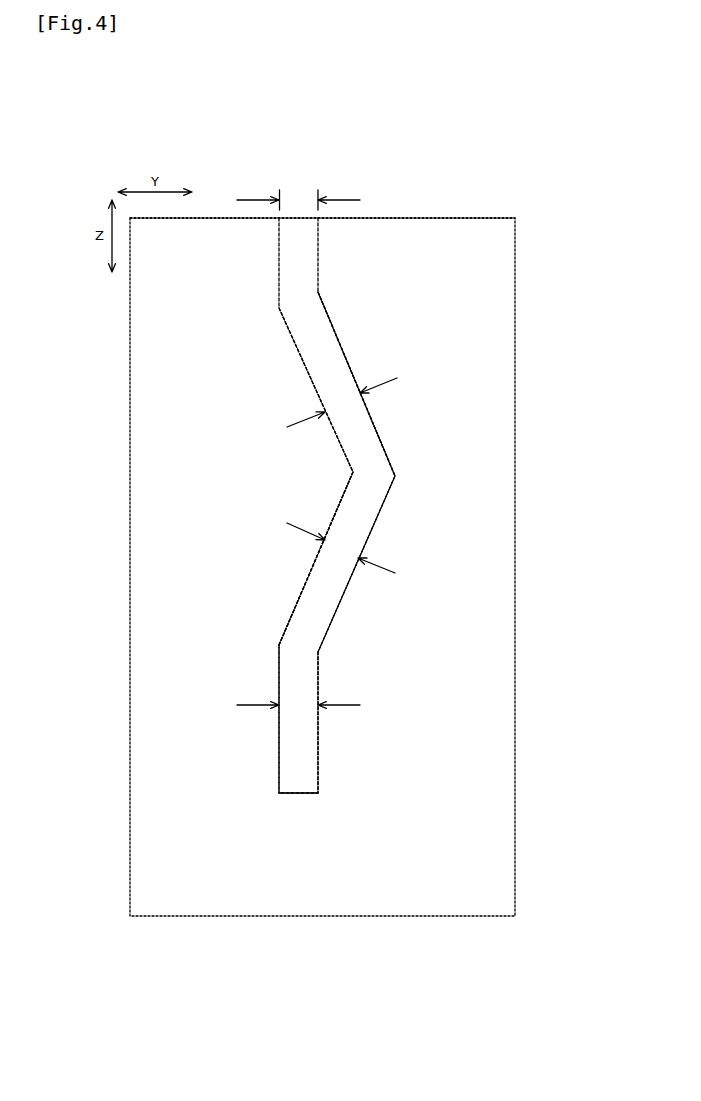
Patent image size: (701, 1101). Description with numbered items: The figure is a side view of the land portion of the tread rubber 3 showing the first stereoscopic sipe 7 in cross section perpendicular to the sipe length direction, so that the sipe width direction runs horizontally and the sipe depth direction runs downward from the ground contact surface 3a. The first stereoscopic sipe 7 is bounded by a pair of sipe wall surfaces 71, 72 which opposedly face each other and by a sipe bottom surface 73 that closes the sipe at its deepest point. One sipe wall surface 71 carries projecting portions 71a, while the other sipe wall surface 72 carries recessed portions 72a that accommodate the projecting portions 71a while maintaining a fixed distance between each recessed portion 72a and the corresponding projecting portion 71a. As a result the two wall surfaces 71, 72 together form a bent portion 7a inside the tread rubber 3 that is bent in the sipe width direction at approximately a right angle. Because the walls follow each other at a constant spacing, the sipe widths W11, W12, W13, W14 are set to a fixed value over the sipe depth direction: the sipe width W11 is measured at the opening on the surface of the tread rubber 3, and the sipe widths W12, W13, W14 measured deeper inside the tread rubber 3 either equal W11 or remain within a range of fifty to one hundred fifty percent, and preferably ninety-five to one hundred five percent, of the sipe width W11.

The tread rubber 3 is at (562, 142).
The ground contact surface 3a is at (432, 218).
The first stereoscopic sipe 7 is at (393, 287).
The sipe wall surface 71 is at (300, 345).
The projecting portion 71a is at (355, 457).
The bent portion 7a is at (412, 475).
The sipe wall surface 72 is at (333, 605).
The recessed portion 72a is at (377, 488).
The sipe bottom surface 73 is at (288, 785).
The sipe width W11 is at (338, 198).
The sipe width W12 is at (302, 417).
The sipe width W13 is at (393, 560).
The sipe width W14 is at (340, 703).